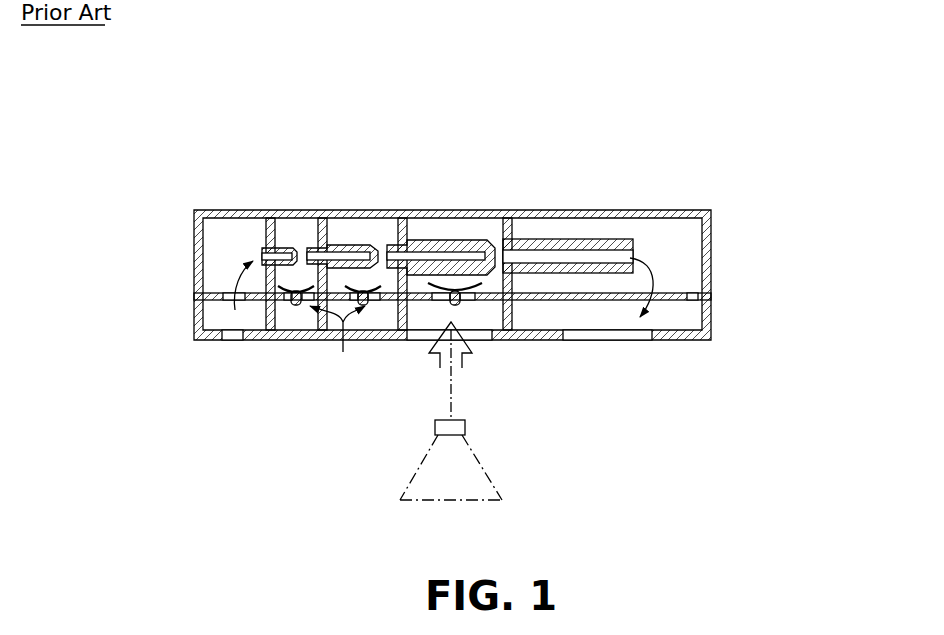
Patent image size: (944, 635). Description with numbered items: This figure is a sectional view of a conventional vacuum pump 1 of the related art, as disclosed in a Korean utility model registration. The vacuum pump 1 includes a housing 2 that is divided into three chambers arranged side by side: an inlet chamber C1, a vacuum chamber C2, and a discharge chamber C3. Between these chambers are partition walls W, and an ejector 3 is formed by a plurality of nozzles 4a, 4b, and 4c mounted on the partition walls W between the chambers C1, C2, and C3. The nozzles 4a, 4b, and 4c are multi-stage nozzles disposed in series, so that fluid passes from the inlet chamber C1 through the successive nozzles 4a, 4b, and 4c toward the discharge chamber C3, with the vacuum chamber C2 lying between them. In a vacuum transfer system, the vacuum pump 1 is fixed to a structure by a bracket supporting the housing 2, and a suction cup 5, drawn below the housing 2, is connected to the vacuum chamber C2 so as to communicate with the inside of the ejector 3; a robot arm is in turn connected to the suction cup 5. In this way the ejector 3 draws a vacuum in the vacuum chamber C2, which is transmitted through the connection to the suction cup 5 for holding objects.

The vacuum pump 1 is at (317, 57).
The housing 2 is at (484, 301).
The ejector 3 is at (470, 235).
The nozzle 4a is at (286, 247).
The nozzle 4b is at (442, 240).
The nozzle 4c is at (575, 239).
The suction cup 5 is at (484, 460).
The inlet chamber C1 is at (238, 258).
The vacuum chamber C2 is at (388, 234).
The discharge chamber C3 is at (685, 260).
The partition walls W is at (410, 282).